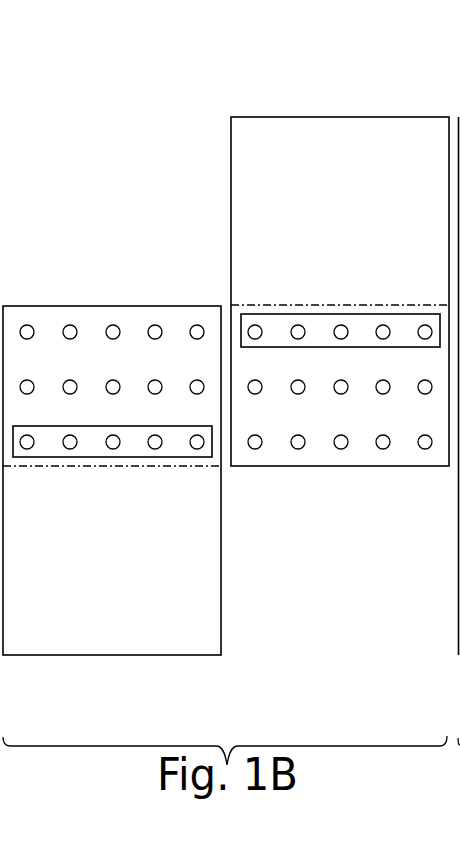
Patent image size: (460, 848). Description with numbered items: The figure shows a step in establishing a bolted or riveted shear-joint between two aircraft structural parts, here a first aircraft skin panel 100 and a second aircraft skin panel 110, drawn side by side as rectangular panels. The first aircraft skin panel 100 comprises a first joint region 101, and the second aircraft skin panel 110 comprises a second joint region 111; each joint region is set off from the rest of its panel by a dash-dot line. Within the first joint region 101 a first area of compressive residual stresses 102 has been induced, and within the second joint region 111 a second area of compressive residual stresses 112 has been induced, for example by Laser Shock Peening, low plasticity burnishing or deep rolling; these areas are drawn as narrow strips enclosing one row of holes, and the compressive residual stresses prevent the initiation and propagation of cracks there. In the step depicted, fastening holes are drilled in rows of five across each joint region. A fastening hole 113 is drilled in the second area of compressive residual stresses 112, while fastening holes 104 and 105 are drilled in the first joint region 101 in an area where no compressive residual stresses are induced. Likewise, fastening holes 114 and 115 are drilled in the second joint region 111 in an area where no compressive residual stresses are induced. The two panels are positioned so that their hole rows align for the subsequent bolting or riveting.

The first aircraft skin panel 100 is at (112, 643).
The first joint region 101 is at (127, 316).
The first area of compressive residual stresses 102 is at (173, 431).
The fastening hole 104 is at (28, 388).
The fastening hole 105 is at (27, 442).
The second aircraft skin panel 110 is at (351, 124).
The second joint region 111 is at (364, 453).
The second area of compressive residual stresses 112 is at (355, 351).
The fastening hole 113 is at (27, 332).
The fastening hole 114 is at (256, 388).
The fastening hole 115 is at (255, 332).